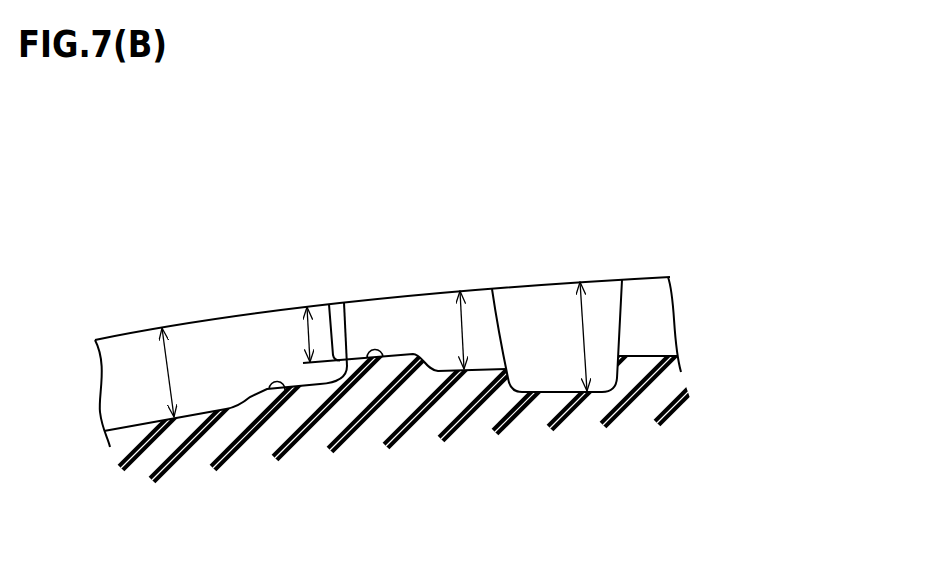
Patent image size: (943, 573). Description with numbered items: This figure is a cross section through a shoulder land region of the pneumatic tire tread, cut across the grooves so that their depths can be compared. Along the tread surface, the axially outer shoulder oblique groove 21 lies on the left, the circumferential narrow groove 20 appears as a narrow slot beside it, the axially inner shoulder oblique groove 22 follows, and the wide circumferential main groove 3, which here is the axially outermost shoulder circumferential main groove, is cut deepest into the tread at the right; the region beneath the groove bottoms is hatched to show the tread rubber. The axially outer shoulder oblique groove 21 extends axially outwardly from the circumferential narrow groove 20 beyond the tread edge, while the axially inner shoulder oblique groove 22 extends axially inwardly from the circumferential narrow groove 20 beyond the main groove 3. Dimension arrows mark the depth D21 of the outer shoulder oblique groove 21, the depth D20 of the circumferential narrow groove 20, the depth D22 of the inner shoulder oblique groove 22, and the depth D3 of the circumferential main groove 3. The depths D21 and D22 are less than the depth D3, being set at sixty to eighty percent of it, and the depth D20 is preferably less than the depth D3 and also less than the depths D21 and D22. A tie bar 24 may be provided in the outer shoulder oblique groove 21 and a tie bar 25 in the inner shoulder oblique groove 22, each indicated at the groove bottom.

The circumferential main groove 3 is at (547, 320).
The circumferential narrow groove 20 is at (335, 320).
The axially outer shoulder oblique groove 21 is at (220, 343).
The axially inner shoulder oblique groove 22 is at (421, 316).
The tie bar 24 is at (285, 392).
The tie bar 25 is at (383, 358).
The depth of axially outer shoulder oblique groove D21 is at (168, 377).
The depth of circumferential narrow groove D20 is at (309, 318).
The depth of axially inner shoulder oblique groove D22 is at (463, 333).
The depth of circumferential main groove D3 is at (583, 337).